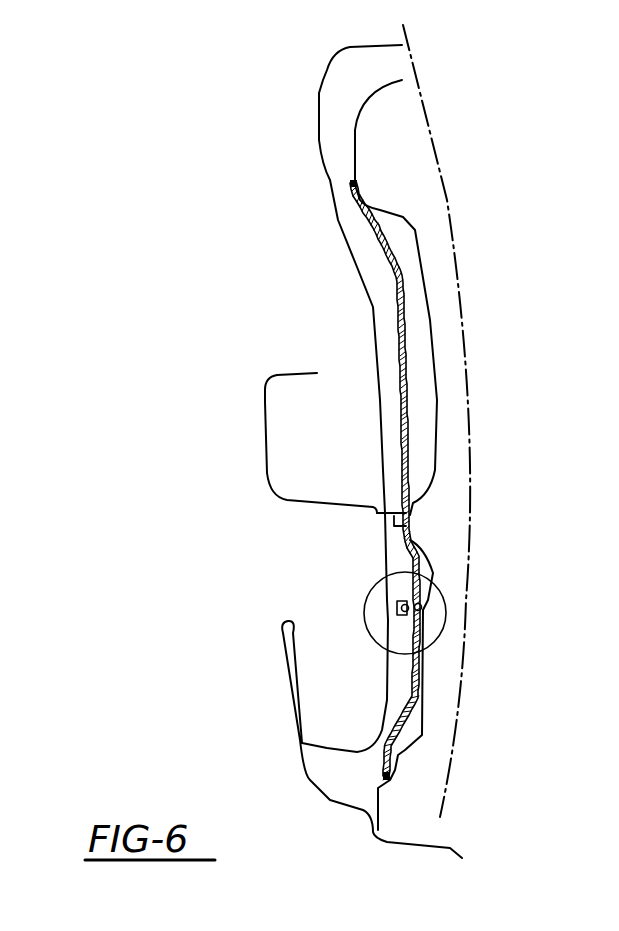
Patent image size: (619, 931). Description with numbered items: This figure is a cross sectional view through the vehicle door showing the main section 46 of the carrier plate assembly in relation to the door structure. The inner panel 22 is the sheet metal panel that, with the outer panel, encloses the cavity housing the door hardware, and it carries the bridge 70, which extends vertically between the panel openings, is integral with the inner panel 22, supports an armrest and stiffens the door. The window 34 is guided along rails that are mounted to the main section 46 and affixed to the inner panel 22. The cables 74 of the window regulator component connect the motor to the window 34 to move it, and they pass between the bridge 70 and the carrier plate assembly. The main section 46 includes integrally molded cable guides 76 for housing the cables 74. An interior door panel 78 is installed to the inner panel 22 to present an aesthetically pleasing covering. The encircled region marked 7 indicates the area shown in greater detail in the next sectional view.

The inner panel 22 is at (453, 848).
The window 34 is at (458, 260).
The main section 46 is at (397, 318).
The bridge 70 is at (433, 322).
The cables 74 is at (440, 592).
The cable guides 76 is at (395, 603).
The interior door panel 78 is at (265, 402).
The detail view circle of FIG. 7 is at (365, 611).